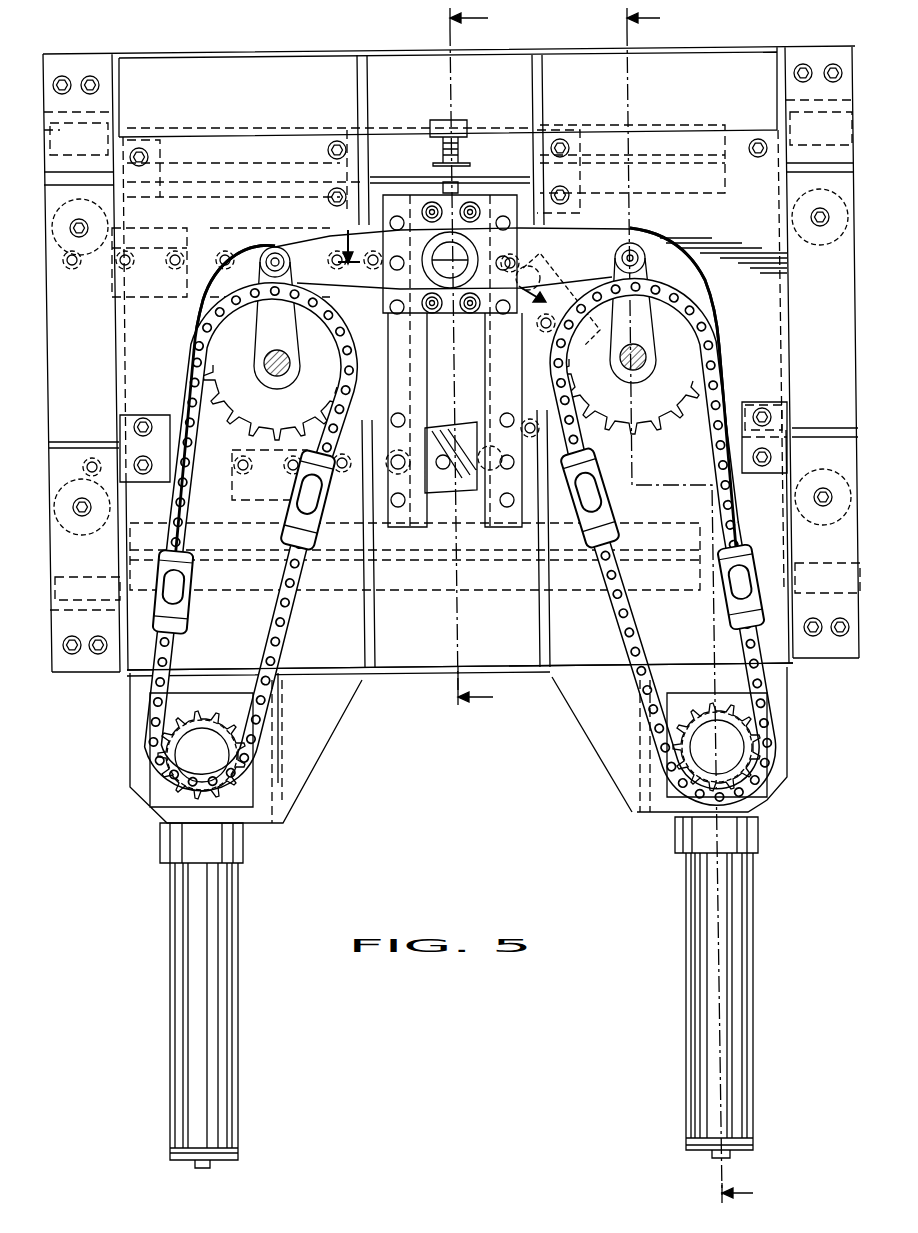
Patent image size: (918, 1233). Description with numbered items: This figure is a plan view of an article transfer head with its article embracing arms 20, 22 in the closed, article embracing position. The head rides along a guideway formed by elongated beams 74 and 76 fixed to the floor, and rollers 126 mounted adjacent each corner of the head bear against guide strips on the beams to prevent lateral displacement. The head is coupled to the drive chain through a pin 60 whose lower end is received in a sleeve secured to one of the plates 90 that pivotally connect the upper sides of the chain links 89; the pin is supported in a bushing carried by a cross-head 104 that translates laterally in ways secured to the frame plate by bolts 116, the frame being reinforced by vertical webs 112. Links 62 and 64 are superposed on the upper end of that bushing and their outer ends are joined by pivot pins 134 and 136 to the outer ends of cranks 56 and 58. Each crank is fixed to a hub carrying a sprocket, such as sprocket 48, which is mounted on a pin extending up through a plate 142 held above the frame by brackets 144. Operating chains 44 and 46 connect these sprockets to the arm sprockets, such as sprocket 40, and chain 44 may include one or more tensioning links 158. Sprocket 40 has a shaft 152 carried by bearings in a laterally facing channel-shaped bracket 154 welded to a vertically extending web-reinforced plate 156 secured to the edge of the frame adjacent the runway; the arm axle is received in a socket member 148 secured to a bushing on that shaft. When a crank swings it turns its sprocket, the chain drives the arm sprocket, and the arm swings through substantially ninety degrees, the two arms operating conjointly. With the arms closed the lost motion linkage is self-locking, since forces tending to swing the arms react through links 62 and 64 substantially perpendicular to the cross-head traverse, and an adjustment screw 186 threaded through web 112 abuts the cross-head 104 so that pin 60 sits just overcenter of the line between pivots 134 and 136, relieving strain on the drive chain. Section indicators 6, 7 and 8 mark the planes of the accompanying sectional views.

The section line 6- 6 is at (698, 605).
The section line 7- 7 is at (480, 357).
The section line 8- 8 is at (442, 282).
The article embracing finger 20 is at (243, 986).
The article embracing arm 22 is at (680, 991).
The sprocket 40 is at (762, 697).
The operating chain 44 is at (612, 583).
The operating chain 46 is at (305, 598).
The sprocket 48 is at (650, 405).
The crank 56 is at (613, 330).
The crank 58 is at (260, 345).
The pin 60 is at (465, 333).
The link 62 is at (577, 247).
The link 64 is at (303, 232).
The elongated beam 74 is at (497, 583).
The elongated beam 76 is at (660, 122).
The chain link 89 is at (147, 396).
The plate 90 is at (442, 428).
The cross-head 104 is at (355, 284).
The vertical web 112 is at (482, 173).
The bolt 116 is at (505, 508).
The roller 126 is at (840, 550).
The pivot pin 134 is at (641, 252).
The pivot pin 136 is at (271, 252).
The plate 142 is at (755, 341).
The bracket 144 is at (753, 402).
The socket member 148 is at (763, 813).
The shaft 152 is at (732, 747).
The channel-shaped bracket 154 is at (632, 812).
The web-reinforced plate 156 is at (528, 670).
The tensioning link 158 is at (727, 582).
The adjustment screw 186 is at (463, 125).